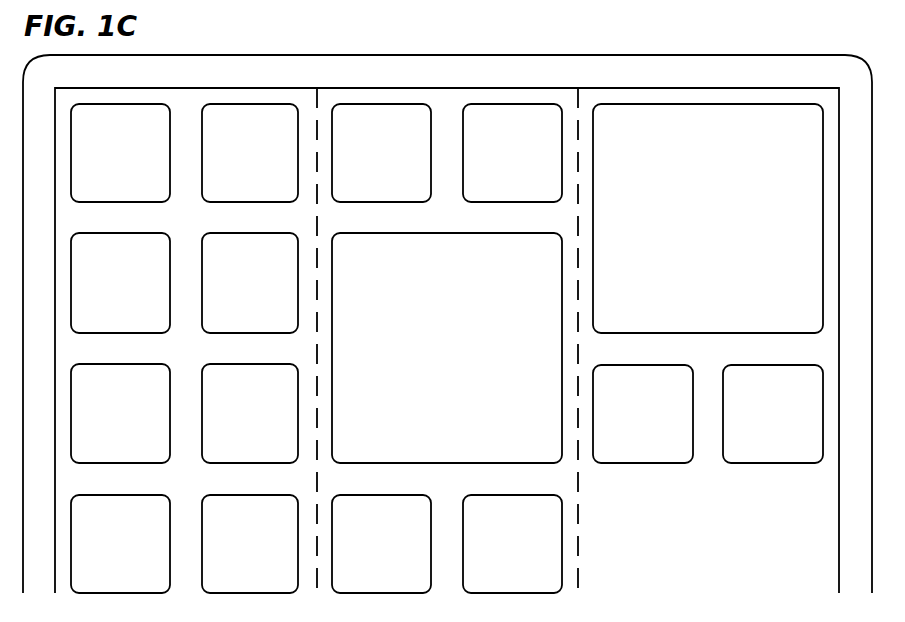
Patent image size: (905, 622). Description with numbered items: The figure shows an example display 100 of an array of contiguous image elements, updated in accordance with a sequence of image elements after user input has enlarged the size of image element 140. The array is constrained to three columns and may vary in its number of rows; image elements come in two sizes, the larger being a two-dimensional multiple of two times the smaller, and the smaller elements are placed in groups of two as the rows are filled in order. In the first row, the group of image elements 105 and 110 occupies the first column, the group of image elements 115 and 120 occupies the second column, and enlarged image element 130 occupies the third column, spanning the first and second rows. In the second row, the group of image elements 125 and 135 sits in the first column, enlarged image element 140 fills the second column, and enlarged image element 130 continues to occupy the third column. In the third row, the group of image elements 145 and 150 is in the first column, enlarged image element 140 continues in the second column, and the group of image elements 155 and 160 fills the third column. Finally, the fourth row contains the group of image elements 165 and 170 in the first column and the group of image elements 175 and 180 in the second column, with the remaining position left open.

The computing device 100 is at (447, 56).
The image element 105 is at (101, 163).
The image element 110 is at (231, 163).
The image element 115 is at (362, 163).
The image element 120 is at (493, 163).
The image element 125 is at (101, 293).
The enlarged image element 130 is at (689, 228).
The image element 135 is at (231, 293).
The enlarged image element 140 is at (428, 358).
The image element 145 is at (101, 423).
The image element 150 is at (231, 423).
The image element 155 is at (624, 423).
The image element 160 is at (754, 423).
The image element 165 is at (101, 554).
The image element 170 is at (231, 554).
The image element 175 is at (362, 554).
The image element 180 is at (493, 554).